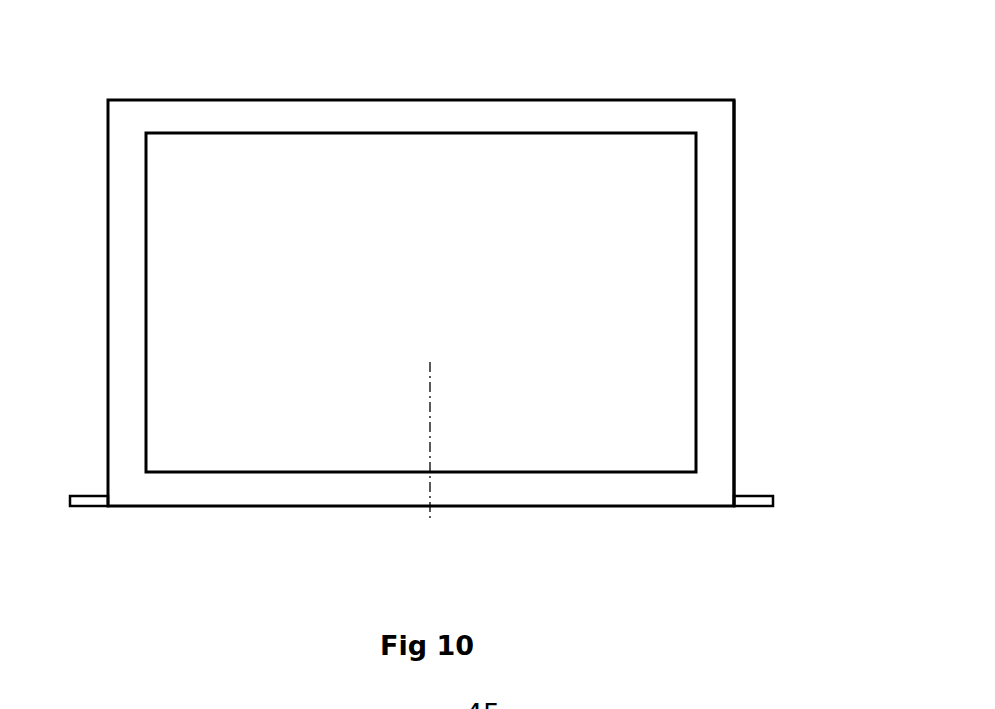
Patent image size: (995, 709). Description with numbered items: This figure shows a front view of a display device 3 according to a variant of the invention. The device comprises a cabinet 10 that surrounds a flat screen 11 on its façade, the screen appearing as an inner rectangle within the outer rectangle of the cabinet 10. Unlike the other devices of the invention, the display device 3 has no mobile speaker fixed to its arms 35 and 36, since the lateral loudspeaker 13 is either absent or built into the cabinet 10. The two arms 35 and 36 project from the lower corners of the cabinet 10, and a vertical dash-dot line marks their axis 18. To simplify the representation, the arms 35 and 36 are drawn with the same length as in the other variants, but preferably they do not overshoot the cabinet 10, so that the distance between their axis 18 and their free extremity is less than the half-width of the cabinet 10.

The display device 3 is at (459, 321).
The cabinet 10 is at (450, 108).
The flat screen 11 is at (580, 144).
The lateral loudspeaker 13 is at (798, 122).
The axis 18 is at (430, 393).
The arm 35 is at (95, 500).
The arm 36 is at (758, 500).